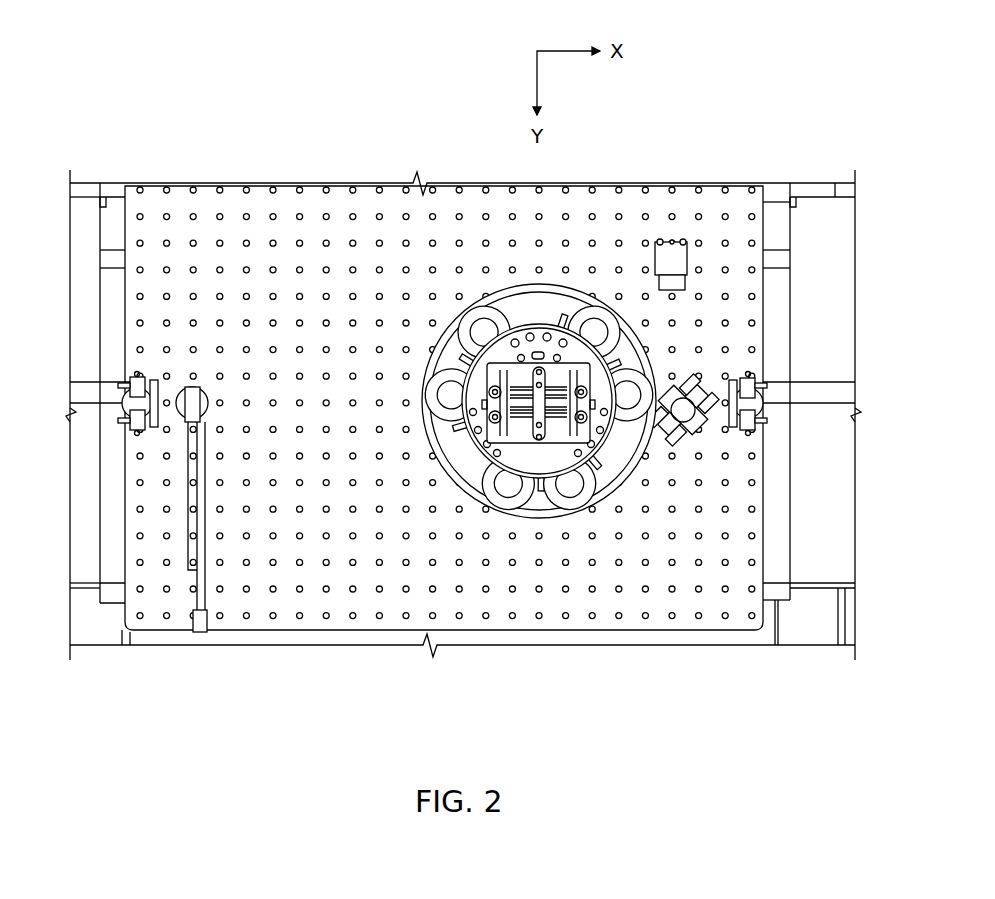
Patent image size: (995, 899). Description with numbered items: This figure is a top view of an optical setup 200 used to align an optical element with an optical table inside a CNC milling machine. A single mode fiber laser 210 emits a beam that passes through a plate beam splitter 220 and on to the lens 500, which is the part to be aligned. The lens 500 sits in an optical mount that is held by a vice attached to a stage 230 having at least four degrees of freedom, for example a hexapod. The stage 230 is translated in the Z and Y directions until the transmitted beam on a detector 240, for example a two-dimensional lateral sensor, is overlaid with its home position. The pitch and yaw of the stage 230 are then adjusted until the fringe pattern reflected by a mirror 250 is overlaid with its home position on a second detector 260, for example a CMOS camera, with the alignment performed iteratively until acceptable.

The optical setup 200 is at (175, 168).
The single mode fiber laser 210 is at (748, 386).
The plate beam splitter 220 is at (700, 425).
The stage 230 is at (543, 443).
The detector 240 is at (190, 412).
The mirror 250 is at (136, 386).
The detector 260 is at (678, 255).
The lens 500 is at (542, 403).